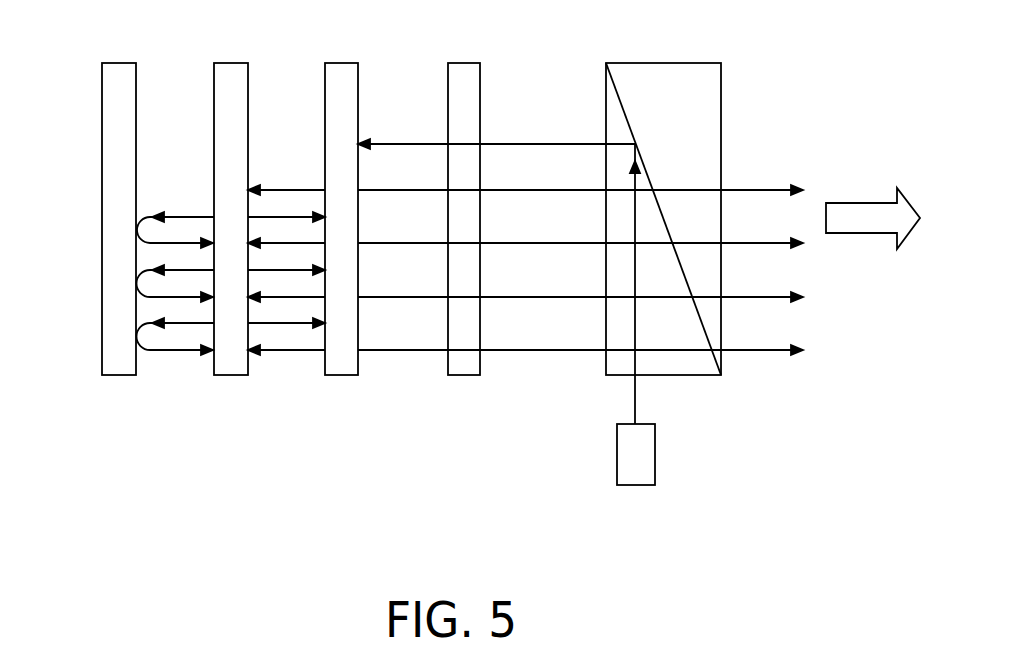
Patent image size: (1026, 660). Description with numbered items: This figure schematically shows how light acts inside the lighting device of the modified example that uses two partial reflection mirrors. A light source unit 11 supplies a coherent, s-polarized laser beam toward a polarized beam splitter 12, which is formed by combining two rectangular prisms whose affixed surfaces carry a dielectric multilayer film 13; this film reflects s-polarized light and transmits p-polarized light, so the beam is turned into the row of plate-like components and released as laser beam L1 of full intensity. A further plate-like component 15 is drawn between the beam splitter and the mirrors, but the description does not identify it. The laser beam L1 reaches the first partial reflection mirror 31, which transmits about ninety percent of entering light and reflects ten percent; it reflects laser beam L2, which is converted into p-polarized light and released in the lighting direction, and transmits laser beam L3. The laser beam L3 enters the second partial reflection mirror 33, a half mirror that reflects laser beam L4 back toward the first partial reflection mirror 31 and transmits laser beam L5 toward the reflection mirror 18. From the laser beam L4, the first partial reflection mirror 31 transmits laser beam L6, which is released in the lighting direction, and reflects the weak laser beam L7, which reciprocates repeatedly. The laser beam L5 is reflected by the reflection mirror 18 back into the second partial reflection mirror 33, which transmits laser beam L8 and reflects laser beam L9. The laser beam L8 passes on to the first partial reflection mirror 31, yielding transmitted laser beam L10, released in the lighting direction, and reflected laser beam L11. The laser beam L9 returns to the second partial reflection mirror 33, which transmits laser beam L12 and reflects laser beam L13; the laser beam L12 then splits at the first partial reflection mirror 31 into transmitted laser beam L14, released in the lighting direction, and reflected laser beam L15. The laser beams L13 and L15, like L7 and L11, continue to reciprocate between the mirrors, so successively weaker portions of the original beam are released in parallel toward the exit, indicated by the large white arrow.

The light source unit 11 is at (636, 487).
The polarized beam splitter 12 is at (705, 70).
The dielectric multilayer film 13 is at (614, 72).
The optical plate 15 is at (464, 70).
The reflection mirror 18 is at (119, 70).
The first partial reflection mirror 31 is at (340, 70).
The second partial reflection mirror 33 is at (232, 70).
The laser beam L1 is at (637, 403).
The laser beam L2 is at (572, 191).
The laser beam L3 is at (296, 186).
The laser beam L4 is at (290, 216).
The laser beam L5 is at (182, 213).
The laser beam L6 is at (572, 245).
The laser beam L7 is at (290, 242).
The laser beam L8 is at (290, 269).
The laser beam L9 is at (140, 250).
The laser beam L10 is at (579, 299).
The laser beam L11 is at (290, 296).
The laser beam L12 is at (290, 322).
The laser beam L13 is at (140, 304).
The laser beam L14 is at (580, 352).
The laser beam L15 is at (277, 358).